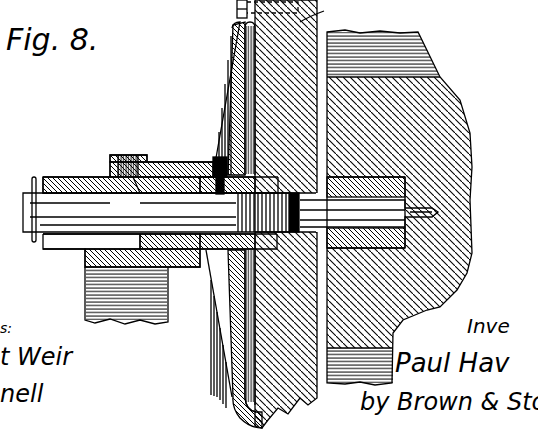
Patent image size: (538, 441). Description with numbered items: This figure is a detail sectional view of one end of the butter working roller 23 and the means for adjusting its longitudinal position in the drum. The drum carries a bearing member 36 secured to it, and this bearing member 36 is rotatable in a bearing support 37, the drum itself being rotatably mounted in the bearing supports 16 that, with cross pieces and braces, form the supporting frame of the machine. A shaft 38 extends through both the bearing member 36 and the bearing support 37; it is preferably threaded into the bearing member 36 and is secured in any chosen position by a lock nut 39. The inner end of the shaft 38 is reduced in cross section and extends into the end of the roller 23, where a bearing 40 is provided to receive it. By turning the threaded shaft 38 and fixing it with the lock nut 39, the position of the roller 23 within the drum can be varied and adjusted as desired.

The bearing support 16 is at (100, 313).
The butter working roller 23 is at (453, 123).
The bearing member 36 is at (238, 112).
The bearing support 37 is at (110, 250).
The shaft 38 is at (80, 205).
The lock nut 39 is at (212, 160).
The bearing 40 is at (390, 190).